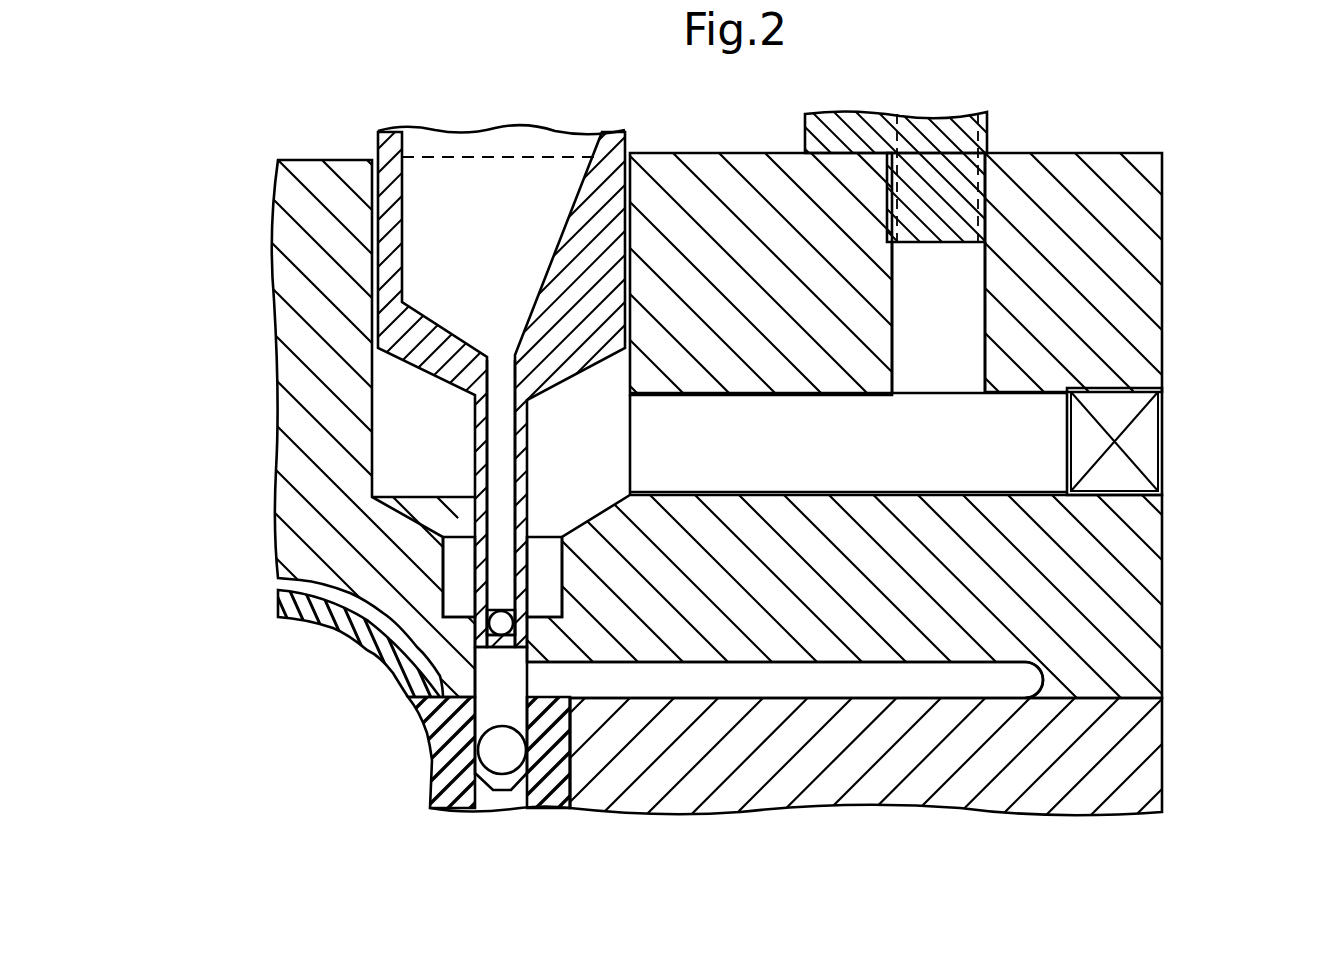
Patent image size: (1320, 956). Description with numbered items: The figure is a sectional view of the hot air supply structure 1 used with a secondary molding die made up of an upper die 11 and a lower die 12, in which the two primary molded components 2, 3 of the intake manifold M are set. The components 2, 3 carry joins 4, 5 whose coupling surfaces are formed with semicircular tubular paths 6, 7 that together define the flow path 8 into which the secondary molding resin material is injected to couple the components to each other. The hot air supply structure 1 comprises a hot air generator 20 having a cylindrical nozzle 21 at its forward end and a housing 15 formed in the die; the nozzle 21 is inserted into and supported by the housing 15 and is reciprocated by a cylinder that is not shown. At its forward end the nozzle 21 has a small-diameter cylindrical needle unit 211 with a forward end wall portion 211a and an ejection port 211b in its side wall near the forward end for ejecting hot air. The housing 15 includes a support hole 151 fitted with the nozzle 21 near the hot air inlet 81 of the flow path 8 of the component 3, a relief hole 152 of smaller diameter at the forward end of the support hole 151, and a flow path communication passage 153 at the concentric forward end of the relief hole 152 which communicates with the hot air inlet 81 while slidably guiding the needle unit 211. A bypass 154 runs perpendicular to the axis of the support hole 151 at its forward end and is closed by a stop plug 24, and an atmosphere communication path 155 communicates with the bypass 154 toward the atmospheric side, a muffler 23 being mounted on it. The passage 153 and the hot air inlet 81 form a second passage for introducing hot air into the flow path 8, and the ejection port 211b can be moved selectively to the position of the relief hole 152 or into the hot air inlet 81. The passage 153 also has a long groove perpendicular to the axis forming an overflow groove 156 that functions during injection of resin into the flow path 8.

The hot air supply structure 1 is at (258, 167).
The hot air generator 20 is at (640, 132).
The nozzle 21 is at (449, 452).
The needle unit 211 is at (485, 470).
The forward end wall portion 211a is at (502, 642).
The ejection port 211b is at (500, 623).
The housing 15 is at (750, 139).
The muffler 23 is at (940, 132).
The upper die 11 is at (1180, 292).
The lower die 12 is at (1145, 785).
The support hole 151 is at (383, 422).
The relief hole 152 is at (450, 586).
The flow path communication passage 153 is at (456, 604).
The bypass 154 is at (990, 480).
The atmosphere communication path 155 is at (975, 272).
The overflow groove 156 is at (1040, 678).
The stop plug 24 is at (1143, 428).
The hot air inlet 81 is at (350, 637).
The intake manifold M is at (368, 741).
The primary molded component 2 is at (372, 688).
The primary molded component 3 is at (442, 741).
The join 4 is at (585, 804).
The join 5 is at (540, 804).
The semicircular tubular path 6 is at (452, 803).
The semicircular tubular path 7 is at (501, 794).
The flow path 8 is at (490, 741).